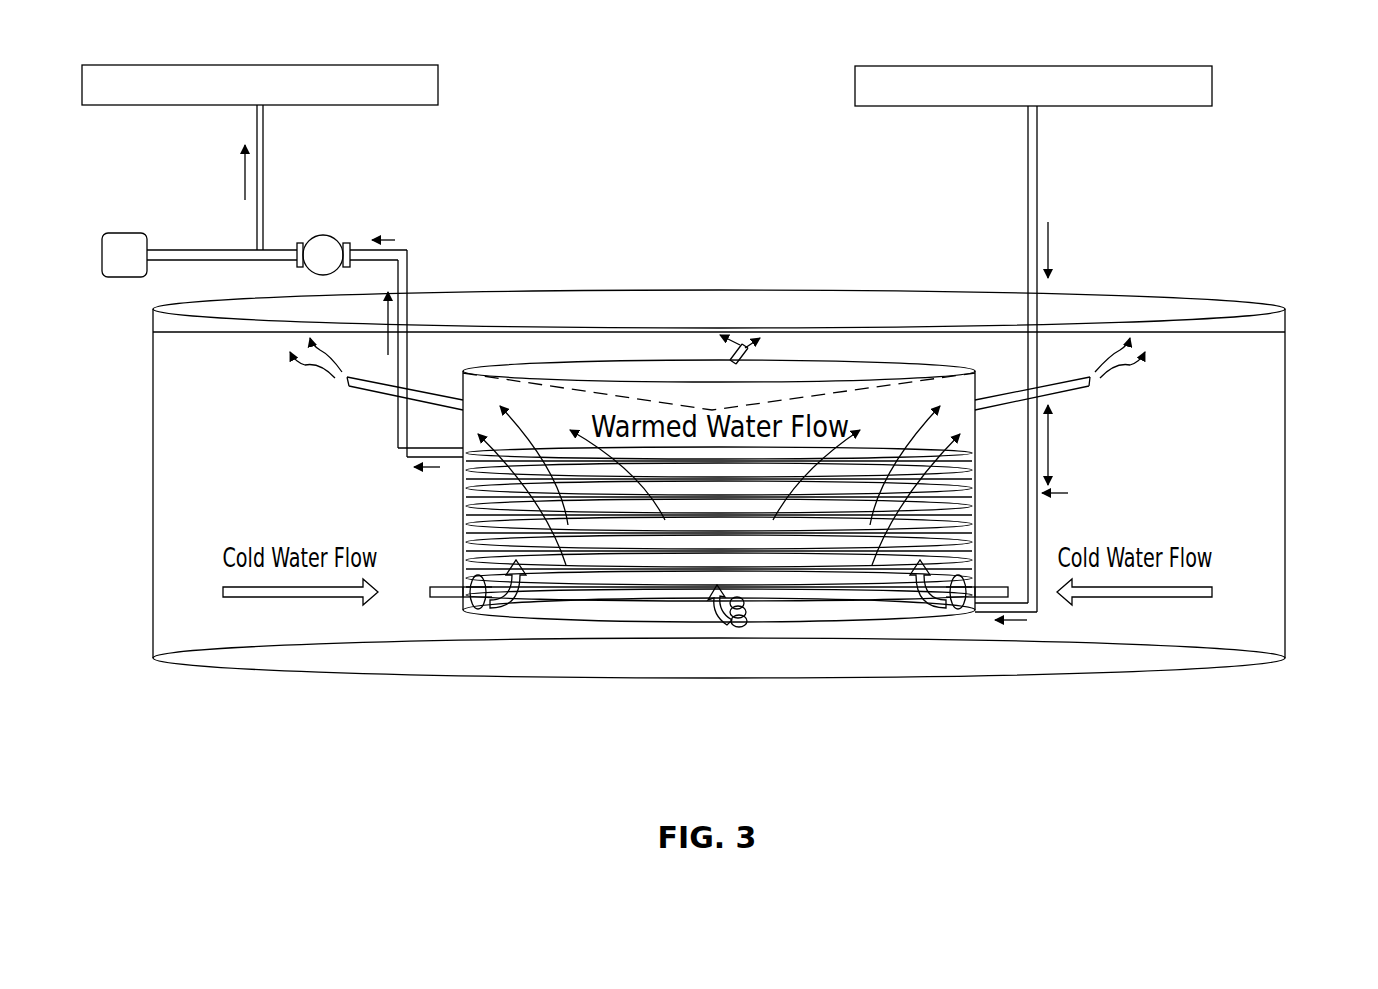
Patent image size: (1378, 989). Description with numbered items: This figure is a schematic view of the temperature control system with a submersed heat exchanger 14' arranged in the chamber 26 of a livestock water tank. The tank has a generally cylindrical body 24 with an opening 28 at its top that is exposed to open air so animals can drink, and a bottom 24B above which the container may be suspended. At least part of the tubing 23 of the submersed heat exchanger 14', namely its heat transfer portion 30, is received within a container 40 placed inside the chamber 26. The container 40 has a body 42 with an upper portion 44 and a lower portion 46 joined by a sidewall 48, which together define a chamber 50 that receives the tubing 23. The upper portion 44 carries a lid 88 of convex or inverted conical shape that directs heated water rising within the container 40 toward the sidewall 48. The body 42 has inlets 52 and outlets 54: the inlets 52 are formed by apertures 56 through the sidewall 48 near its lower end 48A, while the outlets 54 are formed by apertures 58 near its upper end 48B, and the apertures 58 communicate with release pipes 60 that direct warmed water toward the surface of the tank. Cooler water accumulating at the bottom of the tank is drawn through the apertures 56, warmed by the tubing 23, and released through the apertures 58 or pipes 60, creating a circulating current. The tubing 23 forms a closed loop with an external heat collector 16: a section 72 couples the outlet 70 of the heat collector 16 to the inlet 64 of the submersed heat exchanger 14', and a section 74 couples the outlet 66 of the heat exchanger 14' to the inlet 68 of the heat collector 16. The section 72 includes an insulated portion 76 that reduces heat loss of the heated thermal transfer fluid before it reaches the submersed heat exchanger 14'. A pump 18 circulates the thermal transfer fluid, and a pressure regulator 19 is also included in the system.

The submersed heat exchanger 14' is at (429, 690).
The external heat collector 16 is at (426, 65).
The pump 18 is at (333, 237).
The pressure regulator 19 is at (136, 233).
The tubing 23 is at (838, 616).
The body 24 is at (1287, 658).
The bottom 24B is at (1133, 685).
The chamber 26 is at (853, 328).
The opening 28 is at (621, 306).
The heat transfer portion 30 is at (620, 632).
The container 40 is at (920, 356).
The body 42 is at (955, 368).
The upper portion 44 is at (500, 366).
The lower portion 46 is at (545, 642).
The sidewall 48 is at (457, 517).
The lower end 48A is at (890, 634).
The upper end 48B is at (527, 362).
The chamber 50 is at (536, 412).
The inlet 52 is at (455, 606).
The outlet 54 is at (735, 340).
The apertures 56 is at (470, 578).
The apertures 58 is at (461, 412).
The release pipe 60 is at (372, 392).
The inlet 64 is at (975, 606).
The outlet 66 is at (458, 470).
The inlet 68 is at (266, 108).
The outlet 70 is at (1040, 108).
The section 72 is at (1040, 180).
The section 74 is at (266, 160).
The insulated portion 76 is at (1052, 495).
The lid 88 is at (712, 408).